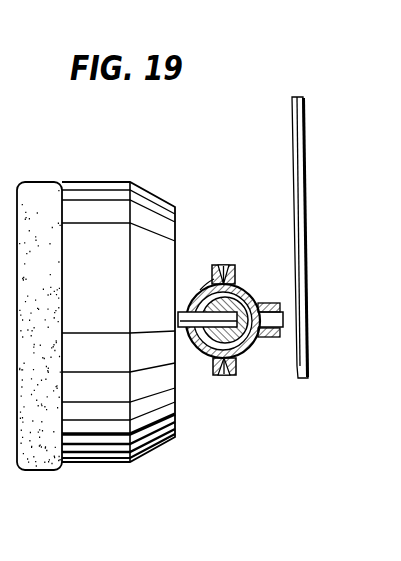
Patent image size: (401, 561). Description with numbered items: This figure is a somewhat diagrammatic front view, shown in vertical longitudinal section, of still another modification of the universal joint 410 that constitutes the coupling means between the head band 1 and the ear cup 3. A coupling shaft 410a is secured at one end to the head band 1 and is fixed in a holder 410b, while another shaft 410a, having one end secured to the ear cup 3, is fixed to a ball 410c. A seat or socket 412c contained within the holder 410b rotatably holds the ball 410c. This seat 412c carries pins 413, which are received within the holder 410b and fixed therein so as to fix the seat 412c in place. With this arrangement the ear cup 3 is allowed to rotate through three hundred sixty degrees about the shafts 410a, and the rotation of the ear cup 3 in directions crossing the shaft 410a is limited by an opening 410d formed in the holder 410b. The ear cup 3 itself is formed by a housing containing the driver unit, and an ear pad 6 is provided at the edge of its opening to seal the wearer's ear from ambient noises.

The head band 1 is at (297, 133).
The ear cup 3 is at (133, 192).
The ear pad 6 is at (50, 183).
The universal joint 410 is at (192, 316).
The coupling shaft 410a is at (284, 300).
The holder 410b is at (223, 376).
The ball 410c is at (225, 265).
The opening 410d is at (192, 340).
The seat 412c is at (205, 288).
The pins 413 is at (242, 362).